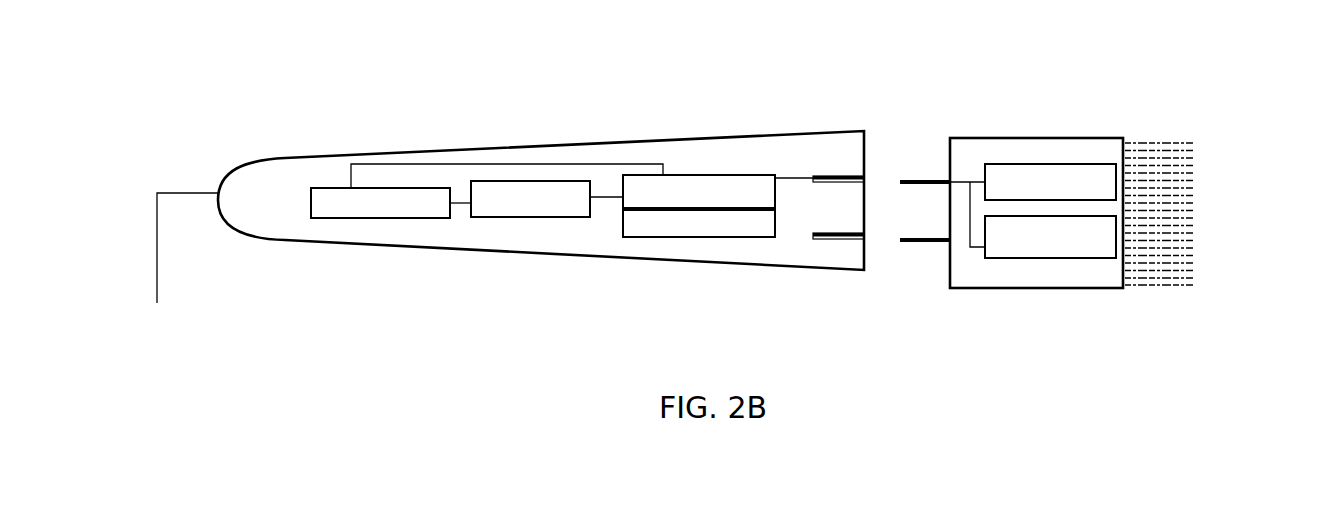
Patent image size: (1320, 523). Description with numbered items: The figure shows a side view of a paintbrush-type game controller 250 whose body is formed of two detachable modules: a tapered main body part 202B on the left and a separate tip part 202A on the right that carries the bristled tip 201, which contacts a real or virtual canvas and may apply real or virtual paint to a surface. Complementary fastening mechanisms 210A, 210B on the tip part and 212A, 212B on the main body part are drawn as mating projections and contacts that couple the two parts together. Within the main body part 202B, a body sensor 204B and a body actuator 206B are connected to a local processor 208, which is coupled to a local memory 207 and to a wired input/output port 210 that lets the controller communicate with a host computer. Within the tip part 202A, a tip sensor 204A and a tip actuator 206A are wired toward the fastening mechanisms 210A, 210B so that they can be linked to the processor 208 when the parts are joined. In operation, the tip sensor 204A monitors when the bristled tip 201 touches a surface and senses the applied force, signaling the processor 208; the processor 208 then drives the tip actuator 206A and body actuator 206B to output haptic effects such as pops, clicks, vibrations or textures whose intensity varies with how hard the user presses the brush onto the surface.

The bristled tip 201 is at (1183, 213).
The tip part 202A is at (1105, 138).
The main body part 202B is at (603, 143).
The tip sensor 204A is at (1013, 164).
The body sensor 204B is at (381, 218).
The tip actuator 206A is at (1078, 258).
The body actuator 206B is at (541, 217).
The local memory 207 is at (712, 237).
The local processor 208 is at (705, 175).
The input/output port 210 is at (157, 232).
The fastening mechanism 210A is at (912, 175).
The fastening mechanism 210B is at (910, 246).
The fastening mechanism 212A is at (820, 173).
The fastening mechanism 212B is at (830, 238).
The brush controller embodiment 250 is at (1070, 67).